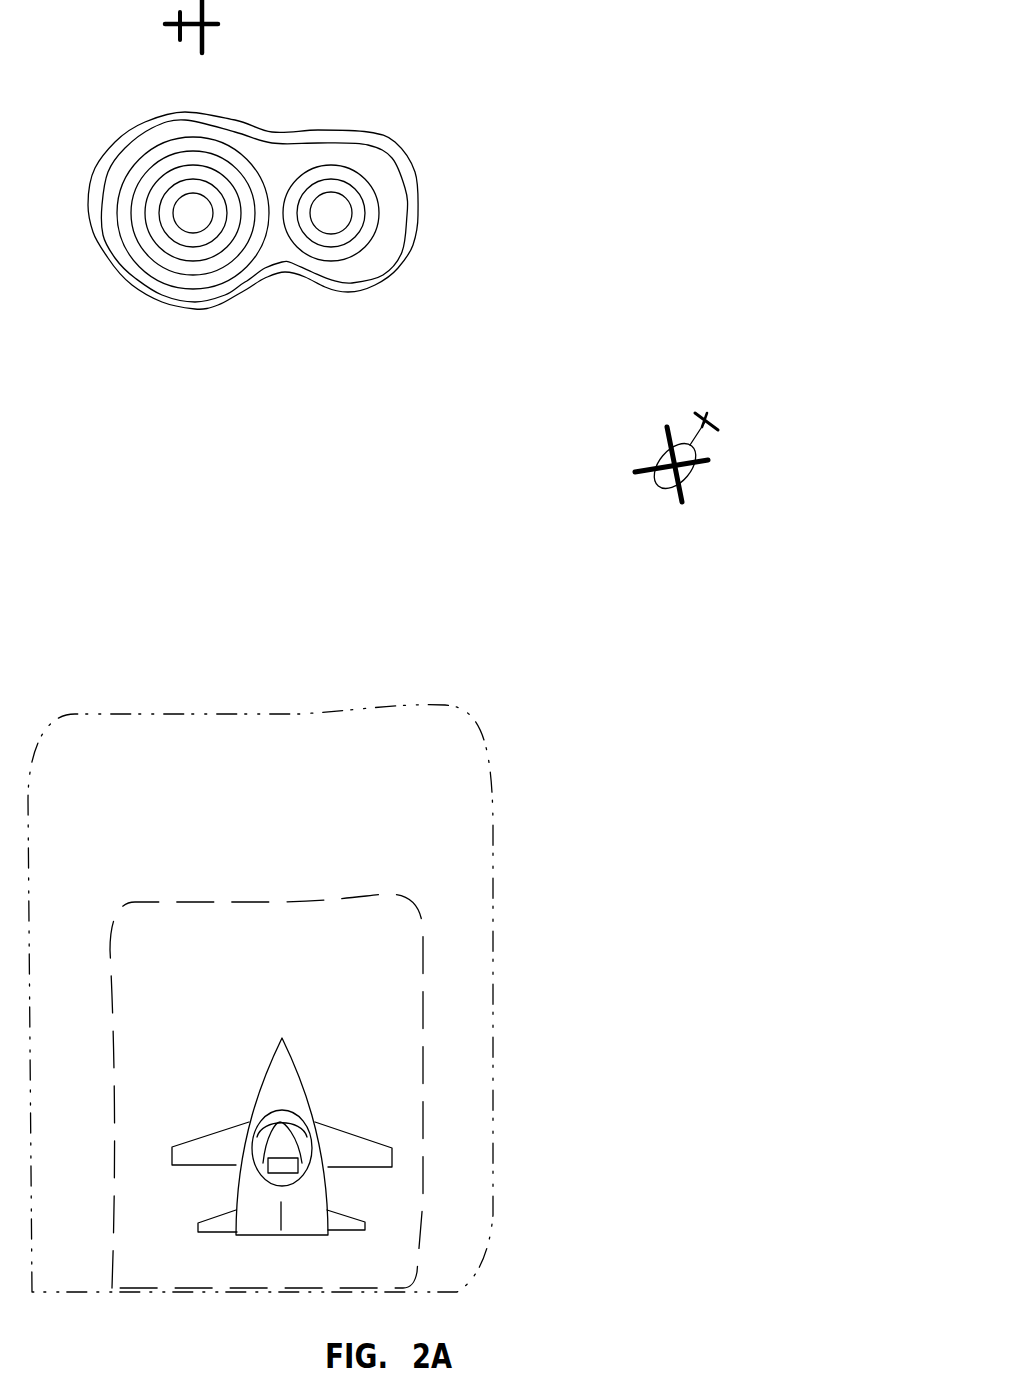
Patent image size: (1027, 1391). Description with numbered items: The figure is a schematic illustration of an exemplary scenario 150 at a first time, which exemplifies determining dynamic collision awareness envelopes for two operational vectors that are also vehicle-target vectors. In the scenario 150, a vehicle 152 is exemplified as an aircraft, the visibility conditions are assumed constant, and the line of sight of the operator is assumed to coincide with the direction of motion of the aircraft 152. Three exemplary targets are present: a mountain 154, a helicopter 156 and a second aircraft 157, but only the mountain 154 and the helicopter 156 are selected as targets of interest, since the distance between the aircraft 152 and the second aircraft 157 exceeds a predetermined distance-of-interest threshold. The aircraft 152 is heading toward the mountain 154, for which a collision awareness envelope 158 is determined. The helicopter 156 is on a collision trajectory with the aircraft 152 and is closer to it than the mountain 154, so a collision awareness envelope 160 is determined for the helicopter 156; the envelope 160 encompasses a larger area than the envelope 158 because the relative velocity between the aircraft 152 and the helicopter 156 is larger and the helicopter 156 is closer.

The exemplary scenario 150 is at (488, 155).
The vehicle 152 is at (253, 1096).
The mountain 154 is at (413, 233).
The helicopter 156 is at (688, 472).
The second aircraft 157 is at (205, 37).
The collision awareness envelope 158 is at (367, 893).
The collision awareness envelope 160 is at (492, 808).